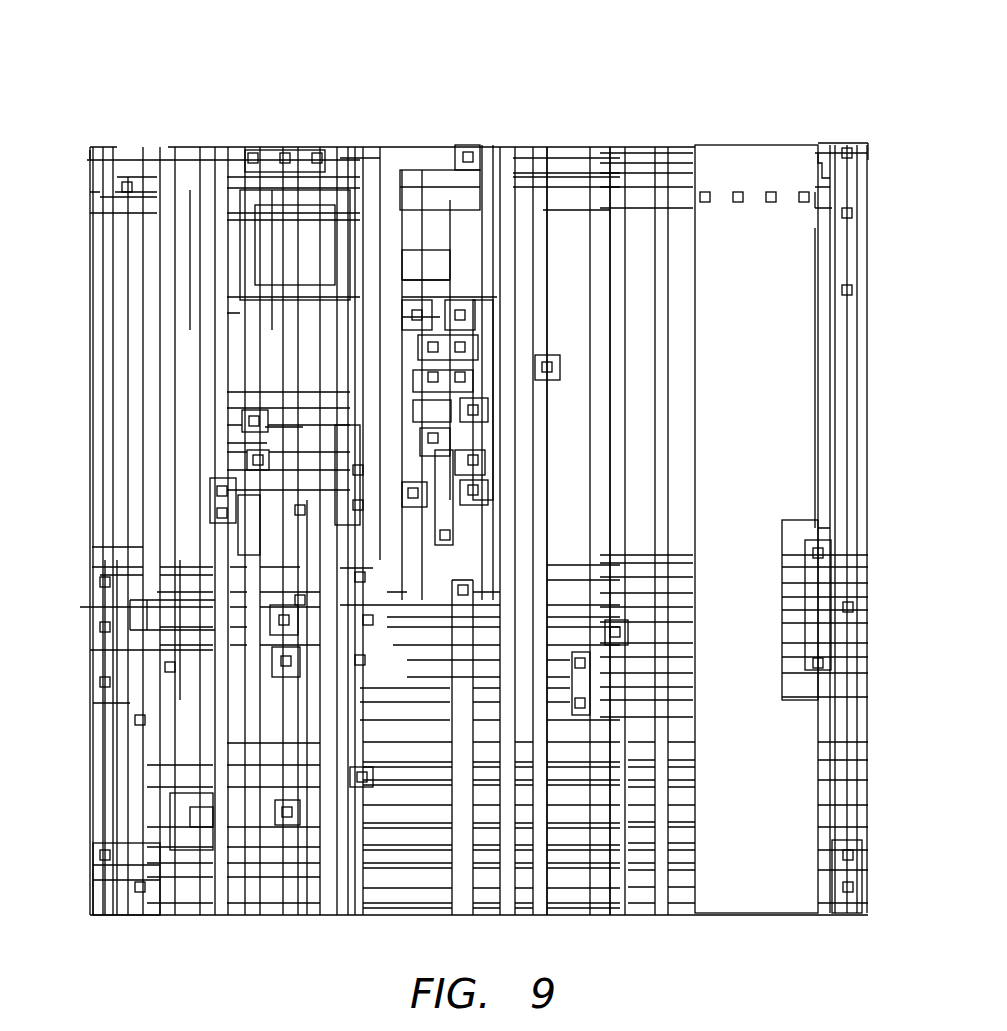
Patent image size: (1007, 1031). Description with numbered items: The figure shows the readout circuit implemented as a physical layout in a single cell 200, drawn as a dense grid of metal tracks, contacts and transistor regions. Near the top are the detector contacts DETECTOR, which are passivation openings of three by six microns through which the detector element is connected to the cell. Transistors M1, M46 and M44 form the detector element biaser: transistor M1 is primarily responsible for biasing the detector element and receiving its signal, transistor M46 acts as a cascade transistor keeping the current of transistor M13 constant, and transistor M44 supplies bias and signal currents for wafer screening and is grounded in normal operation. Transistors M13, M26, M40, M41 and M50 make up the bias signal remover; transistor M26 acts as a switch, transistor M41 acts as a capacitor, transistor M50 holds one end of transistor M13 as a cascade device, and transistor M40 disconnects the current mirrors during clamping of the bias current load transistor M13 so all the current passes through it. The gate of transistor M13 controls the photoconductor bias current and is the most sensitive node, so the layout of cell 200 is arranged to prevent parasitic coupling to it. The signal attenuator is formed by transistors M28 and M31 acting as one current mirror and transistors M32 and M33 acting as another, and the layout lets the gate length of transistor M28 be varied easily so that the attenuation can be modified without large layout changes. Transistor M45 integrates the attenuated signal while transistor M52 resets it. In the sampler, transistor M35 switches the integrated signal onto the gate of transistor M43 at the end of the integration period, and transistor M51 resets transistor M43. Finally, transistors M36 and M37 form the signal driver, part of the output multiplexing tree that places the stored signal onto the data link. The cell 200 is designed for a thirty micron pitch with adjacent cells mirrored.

The cell 200 is at (672, 72).
The detector contacts DETECTOR is at (303, 250).
The transistor M28 is at (216, 152).
The transistor M13 is at (278, 232).
The transistor M41 is at (430, 222).
The transistor M45 is at (572, 222).
The transistor M43 is at (753, 150).
The transistor M31 is at (118, 300).
The transistor M50 is at (267, 418).
The transistor M26 is at (325, 442).
The transistor M40 is at (260, 498).
The transistor M44 is at (180, 617).
The transistor M32 is at (137, 818).
The transistor M52 is at (440, 333).
The transistor M35 is at (447, 408).
The transistor M51 is at (443, 462).
The transistor M36 is at (568, 598).
The transistor M37 is at (583, 625).
The transistor M46 is at (312, 720).
The transistor M1 is at (348, 745).
The transistor M33 is at (415, 898).